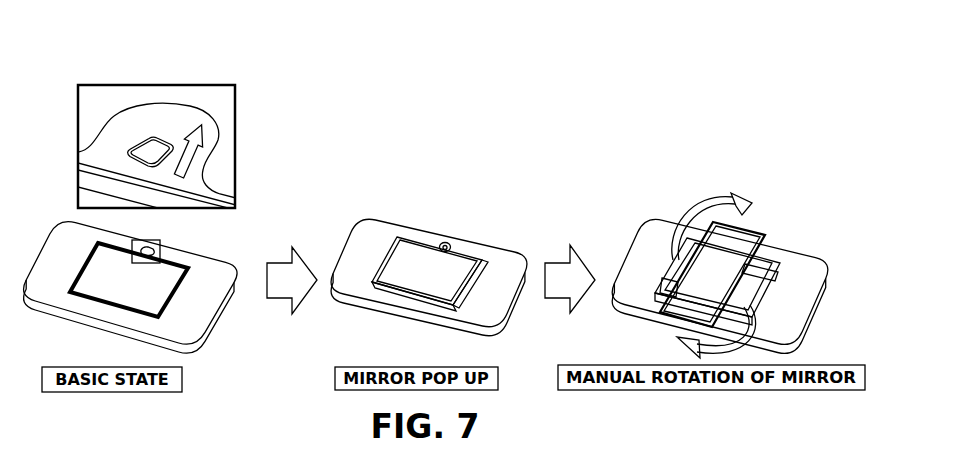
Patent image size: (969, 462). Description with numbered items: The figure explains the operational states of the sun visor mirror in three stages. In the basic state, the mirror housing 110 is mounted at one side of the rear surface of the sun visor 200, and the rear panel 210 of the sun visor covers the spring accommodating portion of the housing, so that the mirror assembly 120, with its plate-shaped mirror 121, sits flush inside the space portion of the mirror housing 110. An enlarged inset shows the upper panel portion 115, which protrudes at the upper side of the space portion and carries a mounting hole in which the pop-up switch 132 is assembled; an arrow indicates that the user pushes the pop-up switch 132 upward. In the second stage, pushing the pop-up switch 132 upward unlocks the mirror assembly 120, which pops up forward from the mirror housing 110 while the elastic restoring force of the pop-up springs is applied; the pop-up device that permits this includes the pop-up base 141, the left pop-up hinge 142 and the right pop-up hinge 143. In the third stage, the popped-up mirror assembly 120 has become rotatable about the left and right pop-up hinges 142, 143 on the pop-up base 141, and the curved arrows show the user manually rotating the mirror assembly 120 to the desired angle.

The mirror housing 110 is at (485, 247).
The upper panel portion 115 is at (171, 117).
The mirror assembly 120 is at (458, 250).
The mirror 121 is at (157, 298).
The pop-up switch 132 is at (141, 146).
The pop-up base 141 is at (675, 267).
The left pop-up hinge 142 is at (652, 293).
The right pop-up hinge 143 is at (460, 302).
The sun visor 200 is at (220, 273).
The rear panel 210 is at (200, 313).